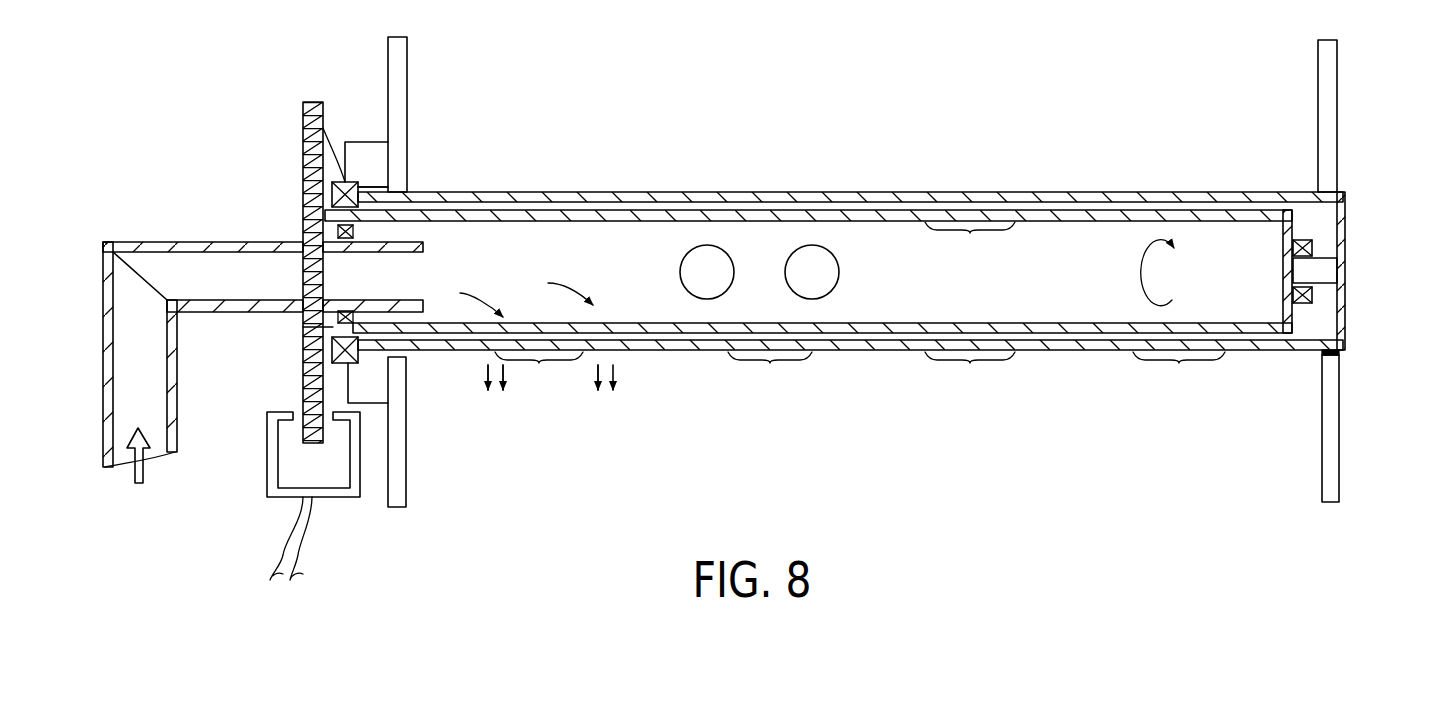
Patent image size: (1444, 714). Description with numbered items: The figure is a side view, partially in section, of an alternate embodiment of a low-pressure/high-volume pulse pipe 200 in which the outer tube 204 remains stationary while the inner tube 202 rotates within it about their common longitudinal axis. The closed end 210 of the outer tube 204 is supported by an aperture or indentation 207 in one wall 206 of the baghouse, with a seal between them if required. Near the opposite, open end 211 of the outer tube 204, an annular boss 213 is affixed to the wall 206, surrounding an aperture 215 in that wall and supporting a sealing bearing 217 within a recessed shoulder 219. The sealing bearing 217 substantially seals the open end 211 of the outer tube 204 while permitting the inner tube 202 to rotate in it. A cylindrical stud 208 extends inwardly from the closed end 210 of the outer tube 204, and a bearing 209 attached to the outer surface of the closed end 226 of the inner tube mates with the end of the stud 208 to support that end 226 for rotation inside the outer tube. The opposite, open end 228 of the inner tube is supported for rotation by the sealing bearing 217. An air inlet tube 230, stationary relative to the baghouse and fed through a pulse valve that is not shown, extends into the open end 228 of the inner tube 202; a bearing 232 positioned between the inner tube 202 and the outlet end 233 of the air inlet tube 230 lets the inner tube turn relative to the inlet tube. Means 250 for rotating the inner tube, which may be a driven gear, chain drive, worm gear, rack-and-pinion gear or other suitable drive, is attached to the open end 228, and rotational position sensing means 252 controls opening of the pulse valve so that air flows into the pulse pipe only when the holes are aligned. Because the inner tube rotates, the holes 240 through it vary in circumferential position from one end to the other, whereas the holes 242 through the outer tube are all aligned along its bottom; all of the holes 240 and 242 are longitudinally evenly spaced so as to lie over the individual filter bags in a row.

The pulse pipe 200 is at (732, 104).
The inner tube 202 is at (933, 327).
The outer tube 204 is at (742, 192).
The wall of the baghouse 206 is at (398, 65).
The aperture or indentation 207 is at (1340, 353).
The cylindrical stud 208 is at (1327, 270).
The bearing 209 is at (1305, 237).
The closed end of the outer tube 210 is at (1374, 195).
The open end of the outer tube 211 is at (418, 166).
The annular boss 213 is at (370, 153).
The aperture 215 is at (410, 187).
The sealing bearing 217 is at (323, 128).
The recessed shoulder 219 is at (348, 182).
The closed end of the inner tube 226 is at (1287, 272).
The open end of the inner tube 228 is at (303, 330).
The air inlet tube 230 is at (152, 402).
The bearing 232 is at (356, 232).
The outlet end of the air inlet tube 233 is at (423, 267).
The holes in the inner tube 240 is at (510, 327).
The holes in the outer tube 242 is at (856, 375).
The means for rotating the inner tube 250 is at (310, 193).
The rotational position sensing means 252 is at (350, 497).